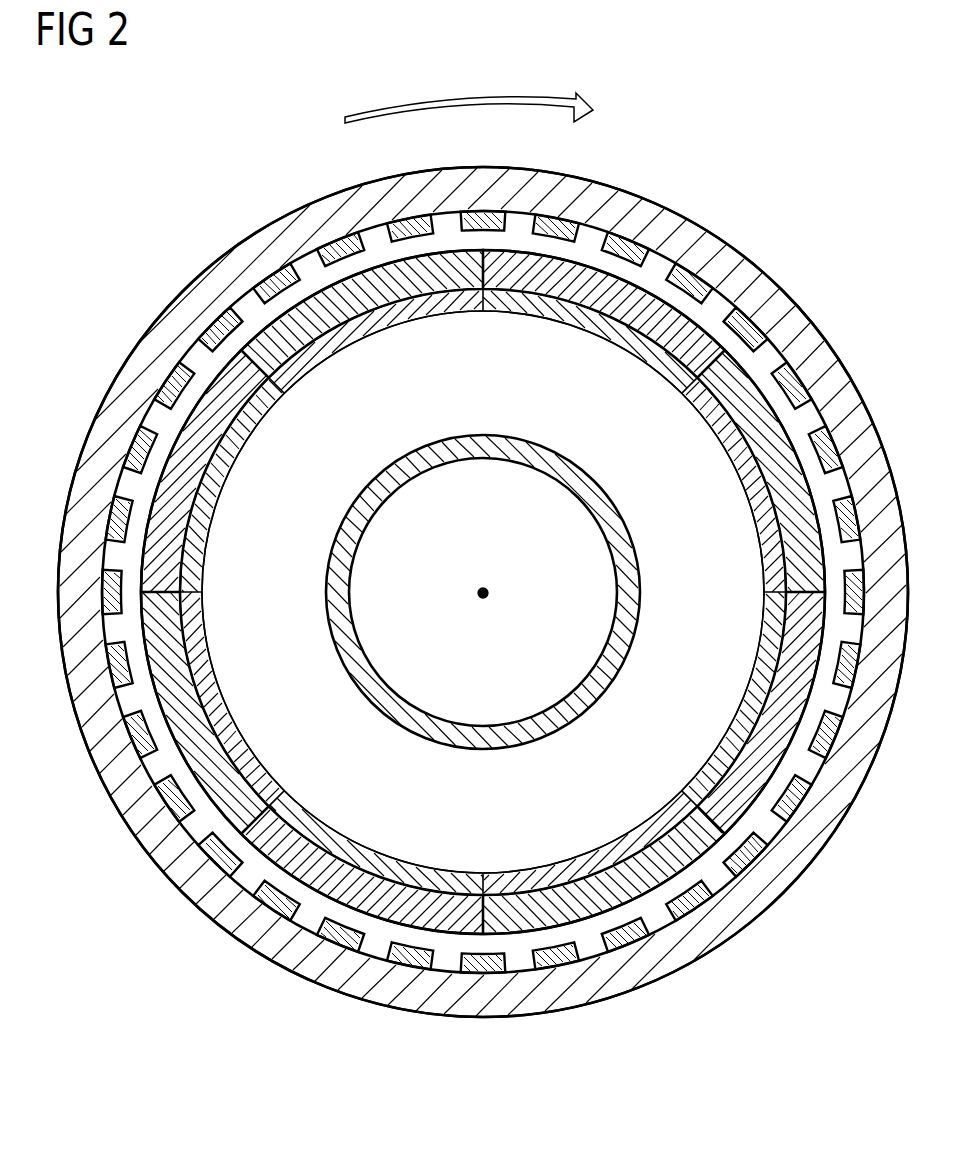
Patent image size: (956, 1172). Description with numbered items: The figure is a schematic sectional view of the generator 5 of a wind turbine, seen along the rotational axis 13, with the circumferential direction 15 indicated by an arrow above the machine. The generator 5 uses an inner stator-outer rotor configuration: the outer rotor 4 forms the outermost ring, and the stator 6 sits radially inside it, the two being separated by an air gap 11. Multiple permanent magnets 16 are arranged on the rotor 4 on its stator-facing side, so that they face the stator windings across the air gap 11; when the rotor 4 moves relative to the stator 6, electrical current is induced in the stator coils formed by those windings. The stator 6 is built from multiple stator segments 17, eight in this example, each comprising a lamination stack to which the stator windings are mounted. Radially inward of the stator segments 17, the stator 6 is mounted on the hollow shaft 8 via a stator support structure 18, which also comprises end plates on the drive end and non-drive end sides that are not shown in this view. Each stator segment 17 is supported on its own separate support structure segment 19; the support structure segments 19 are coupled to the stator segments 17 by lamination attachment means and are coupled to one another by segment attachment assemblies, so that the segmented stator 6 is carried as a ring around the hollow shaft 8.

The rotor 4 is at (557, 192).
The generator 5 is at (253, 202).
The stator 6 is at (587, 254).
The hollow shaft 8 is at (587, 487).
The air gap 11 is at (777, 792).
The rotational axis 13 is at (484, 592).
The circumferential direction 15 is at (455, 100).
The permanent magnets 16 is at (338, 237).
The stator segments 17 is at (372, 312).
The stator support structure 18 is at (707, 458).
The support structure segments 19 is at (428, 320).